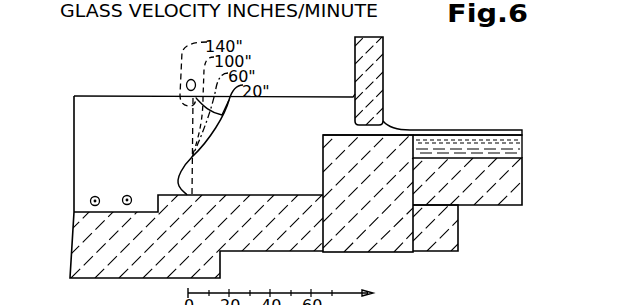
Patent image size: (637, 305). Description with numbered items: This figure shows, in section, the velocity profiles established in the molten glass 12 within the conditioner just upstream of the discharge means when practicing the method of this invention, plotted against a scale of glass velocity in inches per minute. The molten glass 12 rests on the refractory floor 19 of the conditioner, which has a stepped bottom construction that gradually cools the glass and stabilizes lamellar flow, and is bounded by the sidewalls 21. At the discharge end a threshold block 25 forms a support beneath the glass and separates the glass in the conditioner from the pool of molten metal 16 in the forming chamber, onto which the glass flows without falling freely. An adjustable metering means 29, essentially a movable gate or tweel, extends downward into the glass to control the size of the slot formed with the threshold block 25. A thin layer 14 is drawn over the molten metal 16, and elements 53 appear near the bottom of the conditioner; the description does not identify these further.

The molten glass 12 is at (114, 163).
The glass ribbon 14 is at (480, 130).
The molten metal 16 is at (522, 153).
The refractory floor 19 is at (140, 272).
The sidewalls 21 is at (137, 80).
The threshold block 25 is at (377, 171).
The metering means 29 is at (383, 77).
The heating elements 53 is at (126, 196).